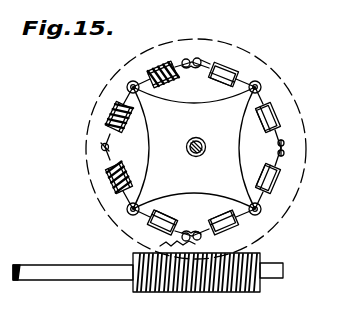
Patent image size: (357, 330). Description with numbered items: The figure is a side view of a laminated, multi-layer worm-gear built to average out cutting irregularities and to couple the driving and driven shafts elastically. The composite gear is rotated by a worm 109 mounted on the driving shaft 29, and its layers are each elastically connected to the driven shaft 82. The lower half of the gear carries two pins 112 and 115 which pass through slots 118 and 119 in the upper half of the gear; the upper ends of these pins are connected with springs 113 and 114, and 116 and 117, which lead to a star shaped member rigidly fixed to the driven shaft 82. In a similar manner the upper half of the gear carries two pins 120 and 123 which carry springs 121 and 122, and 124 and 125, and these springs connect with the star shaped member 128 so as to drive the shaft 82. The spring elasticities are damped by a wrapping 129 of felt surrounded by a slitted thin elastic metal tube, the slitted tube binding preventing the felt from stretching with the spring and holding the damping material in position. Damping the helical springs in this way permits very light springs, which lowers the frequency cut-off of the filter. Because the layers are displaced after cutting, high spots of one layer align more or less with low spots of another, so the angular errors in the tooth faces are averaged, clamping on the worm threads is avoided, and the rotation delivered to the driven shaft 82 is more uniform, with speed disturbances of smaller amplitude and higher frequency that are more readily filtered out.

The shaft 29 is at (41, 272).
The driven shaft 82 is at (206, 147).
The worm 109 is at (157, 285).
The pin 112 is at (200, 245).
The spring 113 is at (157, 238).
The spring 114 is at (240, 230).
The pin 115 is at (191, 58).
The spring 116 is at (160, 57).
The spring 117 is at (244, 79).
The slot 118 is at (204, 238).
The slot 119 is at (209, 57).
The pin 120 is at (101, 147).
The spring 121 is at (100, 131).
The spring 122 is at (96, 167).
The pin 123 is at (287, 150).
The spring 124 is at (284, 196).
The spring 125 is at (281, 128).
The star shaped member 128 is at (127, 210).
The wrapping 129 is at (101, 117).